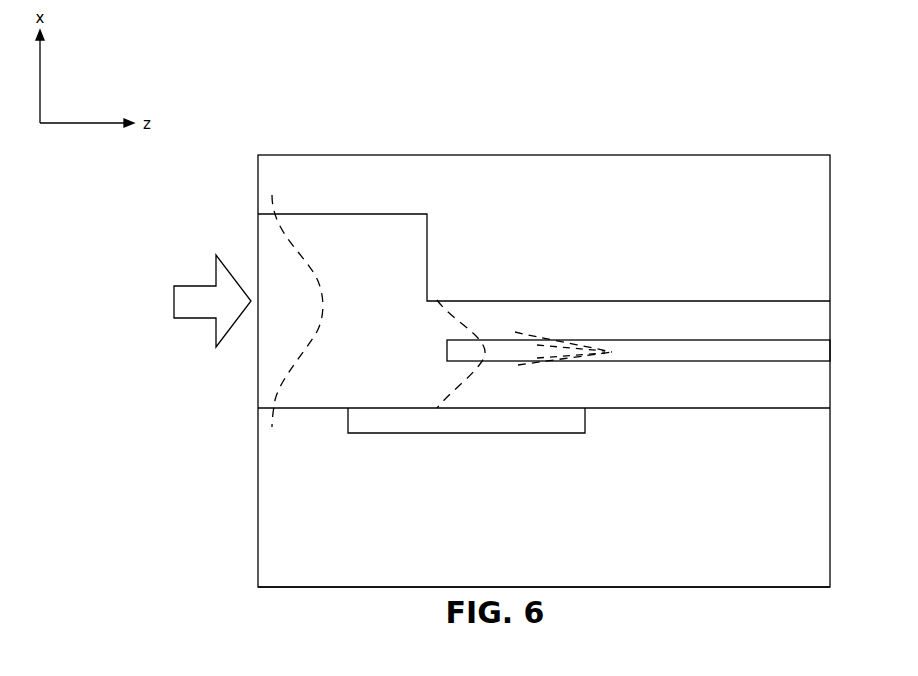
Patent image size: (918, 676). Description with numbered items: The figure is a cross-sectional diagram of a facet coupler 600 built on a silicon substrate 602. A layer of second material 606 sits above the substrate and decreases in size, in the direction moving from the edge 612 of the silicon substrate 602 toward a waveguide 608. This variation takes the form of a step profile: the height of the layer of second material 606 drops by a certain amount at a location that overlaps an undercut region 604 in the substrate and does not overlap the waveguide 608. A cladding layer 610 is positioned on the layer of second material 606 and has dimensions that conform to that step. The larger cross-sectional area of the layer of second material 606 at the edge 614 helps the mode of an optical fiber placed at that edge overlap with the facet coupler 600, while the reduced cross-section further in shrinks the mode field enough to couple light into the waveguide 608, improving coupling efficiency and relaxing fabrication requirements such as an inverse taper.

The facet coupler 600 is at (802, 141).
The silicon substrate 602 is at (777, 509).
The undercut region 604 is at (533, 427).
The layer of second material 606 is at (777, 394).
The waveguide 608 is at (820, 353).
The cladding layer 610 is at (781, 257).
The edge of silicon substrate 612 is at (258, 467).
The edge 614 is at (258, 341).